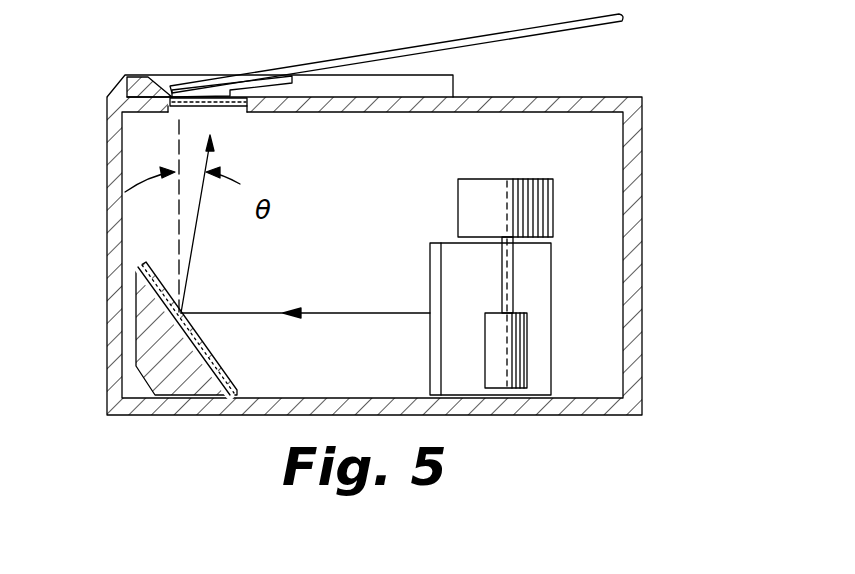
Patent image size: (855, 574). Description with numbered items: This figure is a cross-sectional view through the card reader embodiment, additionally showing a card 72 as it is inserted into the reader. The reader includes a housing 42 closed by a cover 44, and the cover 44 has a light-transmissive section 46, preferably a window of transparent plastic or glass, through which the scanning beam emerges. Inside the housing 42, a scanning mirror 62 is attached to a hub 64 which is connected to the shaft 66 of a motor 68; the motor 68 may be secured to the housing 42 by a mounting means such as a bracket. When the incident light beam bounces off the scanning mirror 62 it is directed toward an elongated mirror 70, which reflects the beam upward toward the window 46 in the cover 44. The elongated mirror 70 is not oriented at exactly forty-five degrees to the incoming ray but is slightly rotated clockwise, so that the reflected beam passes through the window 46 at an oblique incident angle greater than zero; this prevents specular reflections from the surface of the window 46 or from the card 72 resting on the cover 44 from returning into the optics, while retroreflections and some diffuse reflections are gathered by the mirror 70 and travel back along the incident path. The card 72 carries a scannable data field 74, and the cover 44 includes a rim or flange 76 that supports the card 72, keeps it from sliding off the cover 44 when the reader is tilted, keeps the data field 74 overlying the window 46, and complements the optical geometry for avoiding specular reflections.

The housing 42 is at (645, 240).
The cover 44 is at (602, 97).
The light-transmissive section 46 is at (232, 112).
The scanning mirror 62 is at (428, 262).
The hub 64 is at (510, 352).
The shaft 66 is at (513, 277).
The motor 68 is at (510, 183).
The elongated mirror 70 is at (223, 371).
The card 72 is at (418, 43).
The scannable data field 74 is at (272, 80).
The flange 76 is at (125, 83).